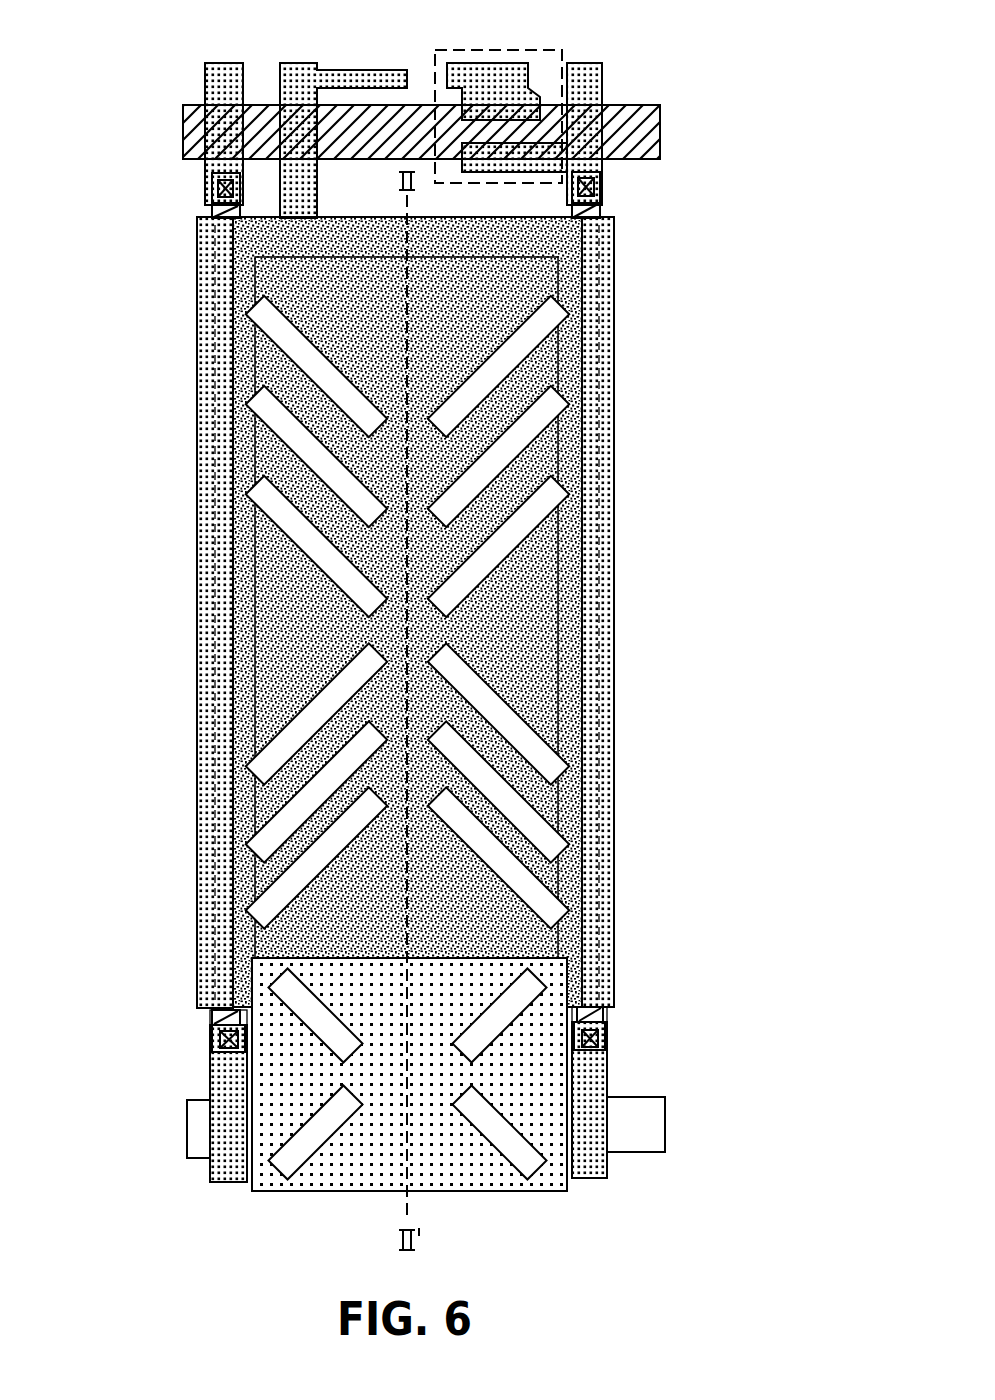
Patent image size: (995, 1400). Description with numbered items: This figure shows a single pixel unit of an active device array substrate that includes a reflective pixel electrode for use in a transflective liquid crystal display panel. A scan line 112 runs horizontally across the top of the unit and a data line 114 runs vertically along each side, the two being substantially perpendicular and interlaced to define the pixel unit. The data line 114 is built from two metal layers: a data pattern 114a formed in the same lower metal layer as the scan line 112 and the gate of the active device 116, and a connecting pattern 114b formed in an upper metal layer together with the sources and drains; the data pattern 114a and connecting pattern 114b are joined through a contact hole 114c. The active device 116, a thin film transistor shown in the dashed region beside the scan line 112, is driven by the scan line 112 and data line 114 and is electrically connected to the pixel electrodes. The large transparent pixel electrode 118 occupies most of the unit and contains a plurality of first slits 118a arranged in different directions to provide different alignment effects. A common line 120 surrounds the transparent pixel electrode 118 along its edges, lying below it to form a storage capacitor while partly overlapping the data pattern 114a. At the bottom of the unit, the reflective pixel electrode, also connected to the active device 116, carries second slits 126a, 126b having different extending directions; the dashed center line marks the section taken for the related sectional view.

The scan line 112 is at (653, 128).
The data line 114 is at (102, 997).
The data pattern 114a is at (222, 1013).
The connecting pattern 114b is at (215, 83).
The contact hole 114c is at (210, 183).
The active device 116 is at (517, 50).
The transparent pixel electrode 118 is at (565, 283).
The first slit 118a is at (510, 350).
The common line 120 is at (607, 505).
The second slit 126a is at (505, 1140).
The slit of second pixel electrode 126b is at (348, 1178).